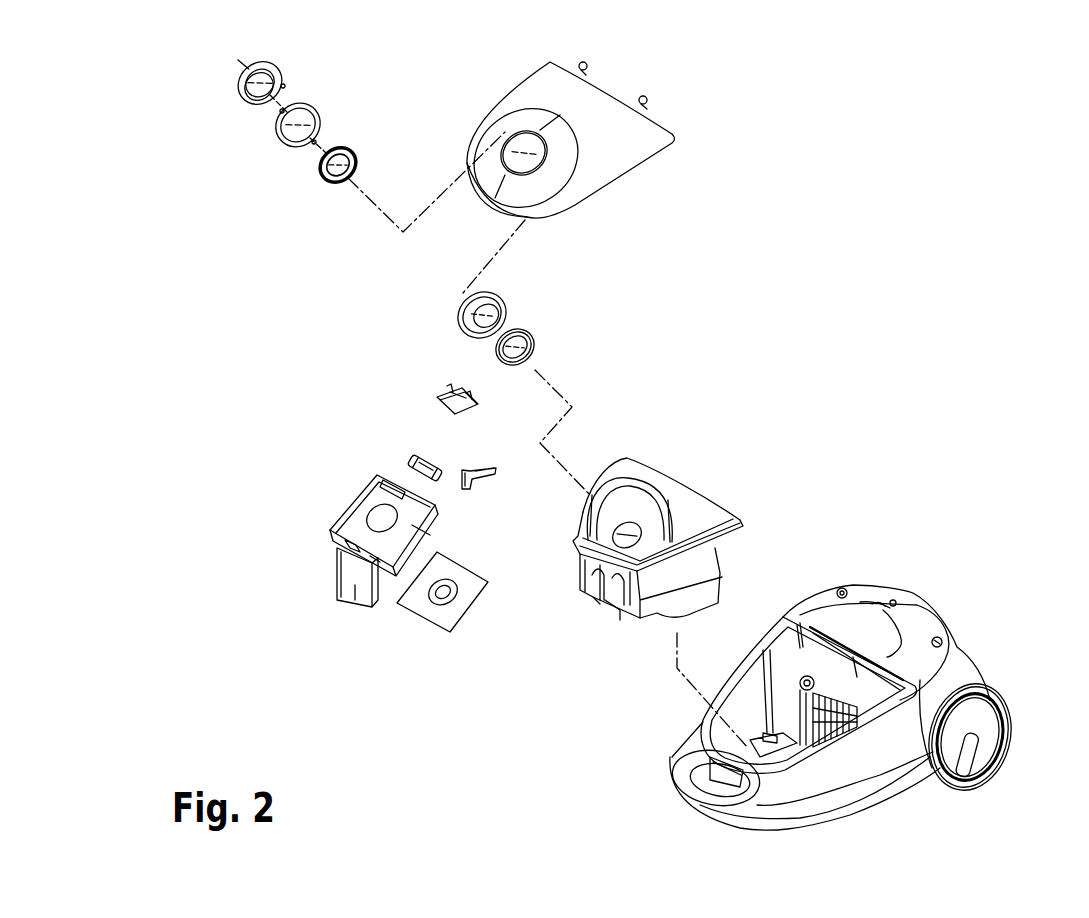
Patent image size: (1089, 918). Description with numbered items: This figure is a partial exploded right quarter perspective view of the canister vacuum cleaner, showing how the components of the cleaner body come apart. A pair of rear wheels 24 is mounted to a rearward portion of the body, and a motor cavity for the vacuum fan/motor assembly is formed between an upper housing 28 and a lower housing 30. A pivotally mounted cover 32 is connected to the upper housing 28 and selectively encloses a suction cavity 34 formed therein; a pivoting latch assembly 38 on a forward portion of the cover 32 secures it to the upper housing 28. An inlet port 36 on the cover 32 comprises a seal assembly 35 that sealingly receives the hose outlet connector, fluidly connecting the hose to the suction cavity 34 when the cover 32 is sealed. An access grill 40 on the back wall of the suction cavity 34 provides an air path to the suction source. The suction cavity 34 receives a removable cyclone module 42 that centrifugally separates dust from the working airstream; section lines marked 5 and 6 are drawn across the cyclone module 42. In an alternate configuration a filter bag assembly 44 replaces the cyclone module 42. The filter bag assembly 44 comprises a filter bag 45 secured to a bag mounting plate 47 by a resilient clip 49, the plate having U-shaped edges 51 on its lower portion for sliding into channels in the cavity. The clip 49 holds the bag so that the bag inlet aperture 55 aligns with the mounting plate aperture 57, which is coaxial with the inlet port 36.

The rear wheels 24 is at (993, 747).
The upper housing 28 is at (967, 663).
The lower housing 30 is at (797, 830).
The cover 32 is at (628, 135).
The suction cavity 34 is at (752, 755).
The seal assembly 35 is at (217, 86).
The inlet port 36 is at (520, 133).
The latch assembly 38 is at (423, 400).
The access grill 40 is at (827, 723).
The cyclone module 42 is at (744, 528).
The filter bag assembly 44 is at (300, 632).
The filter bag 45 is at (417, 607).
The bag mounting plate 47 is at (347, 520).
The resilient clip 49 is at (410, 461).
The U-shaped edges 51 is at (338, 567).
The bag inlet aperture 55 is at (450, 585).
The mounting plate aperture 57 is at (380, 518).
The section line 5 is at (556, 521).
The section line 6 is at (718, 503).